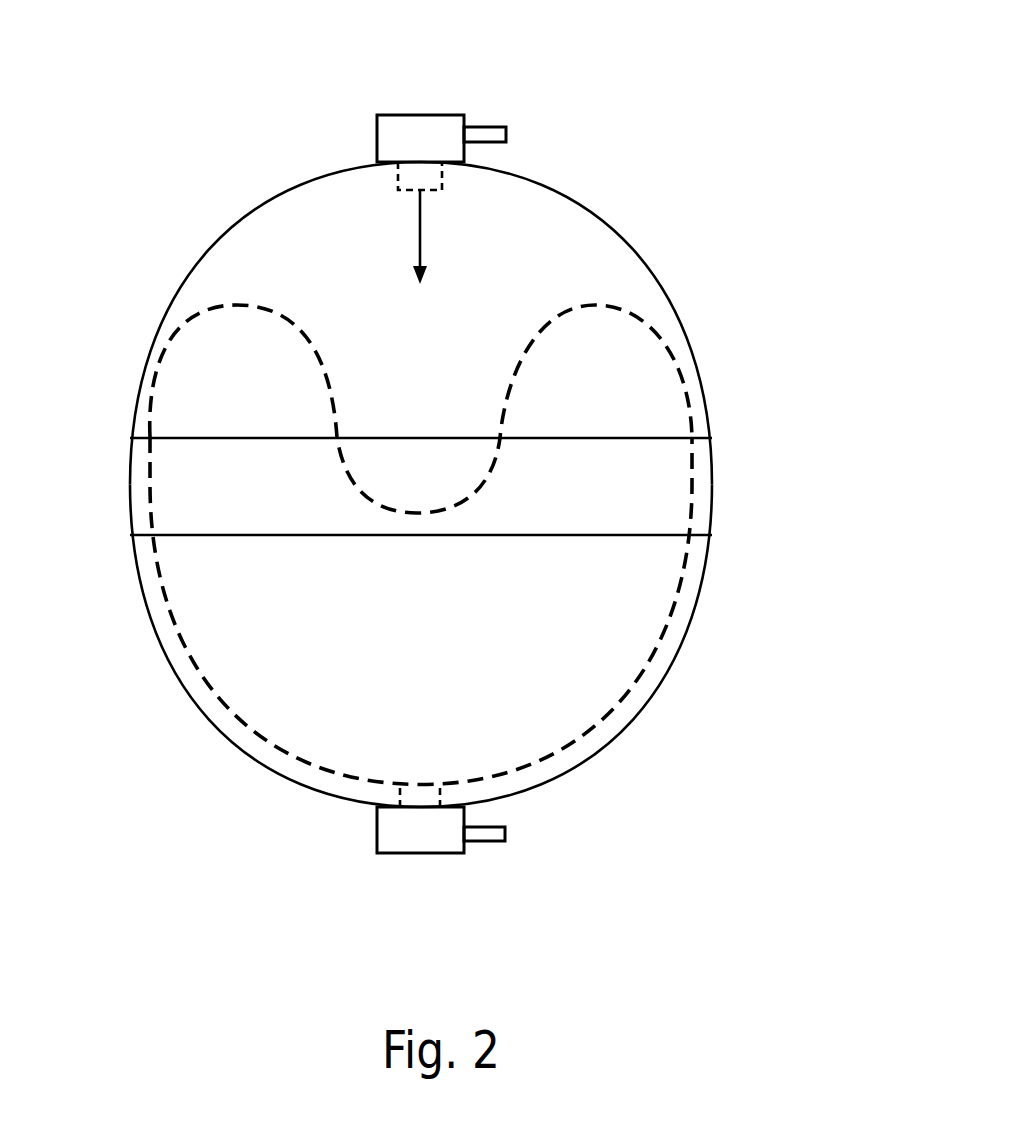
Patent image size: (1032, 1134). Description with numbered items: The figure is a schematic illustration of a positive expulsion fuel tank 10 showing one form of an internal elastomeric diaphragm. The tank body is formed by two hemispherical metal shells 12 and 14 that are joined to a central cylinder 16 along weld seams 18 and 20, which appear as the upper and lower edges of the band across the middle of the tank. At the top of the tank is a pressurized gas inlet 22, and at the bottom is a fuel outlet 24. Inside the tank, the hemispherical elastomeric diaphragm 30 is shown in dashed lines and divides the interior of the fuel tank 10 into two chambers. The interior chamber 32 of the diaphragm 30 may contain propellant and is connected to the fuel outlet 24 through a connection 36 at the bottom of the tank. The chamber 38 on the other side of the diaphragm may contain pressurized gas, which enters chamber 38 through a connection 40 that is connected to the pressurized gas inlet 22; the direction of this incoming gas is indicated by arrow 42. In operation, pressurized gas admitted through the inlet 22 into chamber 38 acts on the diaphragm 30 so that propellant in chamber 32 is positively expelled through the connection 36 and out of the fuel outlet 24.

The positive expulsion fuel tank 10 is at (737, 116).
The hemispherical metal shell 12 is at (567, 250).
The hemispherical metal shell 14 is at (608, 645).
The cylinder 16 is at (478, 471).
The weld seam 18 is at (642, 438).
The weld seam 20 is at (642, 535).
The pressurized gas inlet 22 is at (423, 140).
The fuel outlet 24 is at (424, 828).
The elastomeric diaphragm 30 is at (237, 305).
The interior chamber 32 is at (390, 622).
The connection 36 is at (427, 795).
The chamber 38 is at (355, 277).
The connection 40 is at (420, 176).
The arrow 42 is at (420, 218).